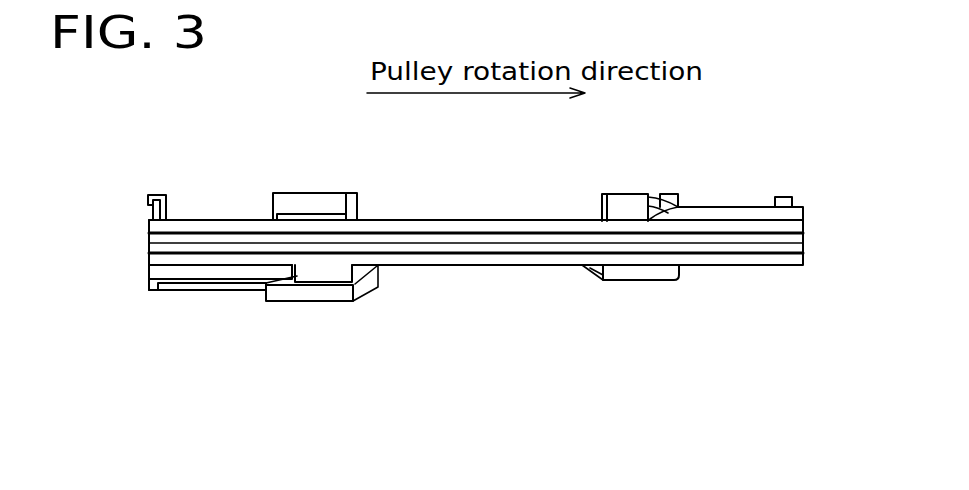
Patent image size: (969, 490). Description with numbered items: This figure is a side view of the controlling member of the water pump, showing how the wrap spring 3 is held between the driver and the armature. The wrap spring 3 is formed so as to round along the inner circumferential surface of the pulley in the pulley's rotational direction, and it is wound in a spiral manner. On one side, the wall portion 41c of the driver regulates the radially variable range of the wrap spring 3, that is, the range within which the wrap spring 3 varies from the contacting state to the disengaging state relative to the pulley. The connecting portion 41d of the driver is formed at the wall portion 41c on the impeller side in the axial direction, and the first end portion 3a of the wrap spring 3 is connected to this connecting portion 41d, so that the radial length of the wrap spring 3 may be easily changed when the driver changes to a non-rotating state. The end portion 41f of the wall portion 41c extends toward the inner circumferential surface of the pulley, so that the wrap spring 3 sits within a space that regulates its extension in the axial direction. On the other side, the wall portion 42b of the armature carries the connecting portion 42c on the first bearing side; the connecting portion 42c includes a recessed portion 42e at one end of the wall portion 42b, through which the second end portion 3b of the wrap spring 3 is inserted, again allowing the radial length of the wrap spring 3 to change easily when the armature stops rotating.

The wrap spring 3 is at (410, 243).
The first end portion 3a is at (275, 272).
The second end portion 3b is at (662, 212).
The wall portion 41c is at (332, 272).
The connecting portion 41d is at (283, 285).
The end portion 41f is at (327, 203).
The wall portion 42b is at (622, 215).
The connecting portion 42c is at (663, 197).
The recessed portion 42e is at (659, 220).